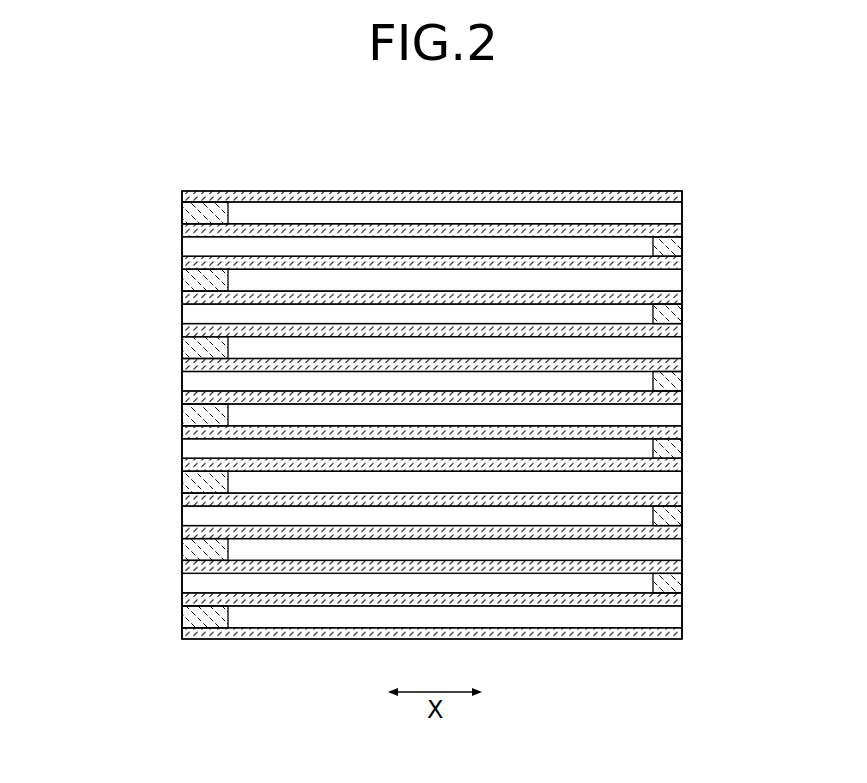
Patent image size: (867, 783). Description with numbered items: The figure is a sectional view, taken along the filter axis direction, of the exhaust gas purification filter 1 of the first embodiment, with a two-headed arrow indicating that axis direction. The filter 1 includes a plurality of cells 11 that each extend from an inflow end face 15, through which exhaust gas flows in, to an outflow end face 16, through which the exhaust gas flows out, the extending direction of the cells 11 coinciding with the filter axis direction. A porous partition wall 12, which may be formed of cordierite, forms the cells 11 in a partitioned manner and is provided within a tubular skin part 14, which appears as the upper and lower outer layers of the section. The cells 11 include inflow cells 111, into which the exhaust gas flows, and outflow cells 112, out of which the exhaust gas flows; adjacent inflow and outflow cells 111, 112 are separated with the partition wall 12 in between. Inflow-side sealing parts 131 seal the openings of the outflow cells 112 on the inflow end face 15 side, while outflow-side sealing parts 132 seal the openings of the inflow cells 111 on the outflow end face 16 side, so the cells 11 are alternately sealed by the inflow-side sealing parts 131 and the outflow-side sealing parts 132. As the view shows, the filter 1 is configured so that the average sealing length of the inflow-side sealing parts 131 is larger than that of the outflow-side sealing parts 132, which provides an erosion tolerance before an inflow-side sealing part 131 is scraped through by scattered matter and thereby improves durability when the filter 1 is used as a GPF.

The exhaust gas purification filter 1 is at (547, 163).
The cells 11 is at (80, 367).
The inflow cells 111 is at (573, 313).
The outflow cells 112 is at (343, 283).
The partition wall 12 is at (613, 404).
The inflow-side sealing parts 131 is at (185, 280).
The outflow-side sealing parts 132 is at (670, 311).
The skin part 14 is at (628, 191).
The inflow end face 15 is at (182, 532).
The outflow end face 16 is at (683, 497).